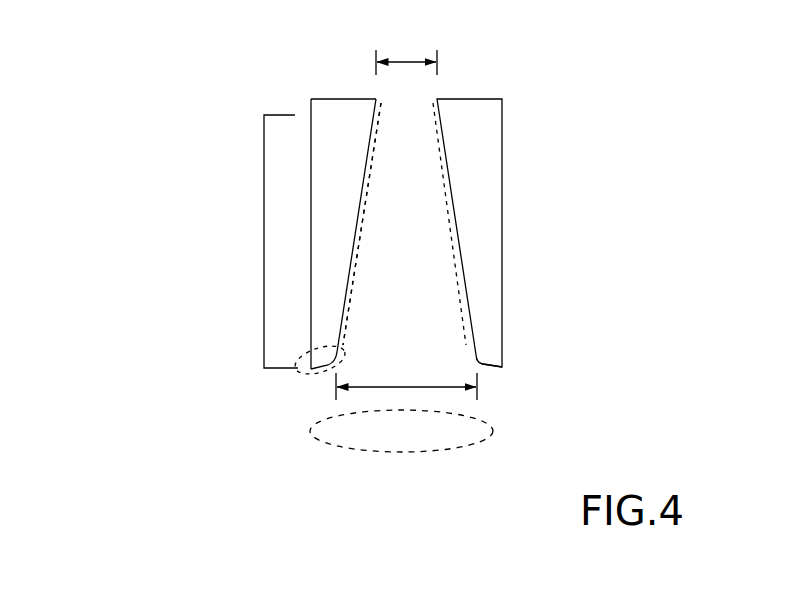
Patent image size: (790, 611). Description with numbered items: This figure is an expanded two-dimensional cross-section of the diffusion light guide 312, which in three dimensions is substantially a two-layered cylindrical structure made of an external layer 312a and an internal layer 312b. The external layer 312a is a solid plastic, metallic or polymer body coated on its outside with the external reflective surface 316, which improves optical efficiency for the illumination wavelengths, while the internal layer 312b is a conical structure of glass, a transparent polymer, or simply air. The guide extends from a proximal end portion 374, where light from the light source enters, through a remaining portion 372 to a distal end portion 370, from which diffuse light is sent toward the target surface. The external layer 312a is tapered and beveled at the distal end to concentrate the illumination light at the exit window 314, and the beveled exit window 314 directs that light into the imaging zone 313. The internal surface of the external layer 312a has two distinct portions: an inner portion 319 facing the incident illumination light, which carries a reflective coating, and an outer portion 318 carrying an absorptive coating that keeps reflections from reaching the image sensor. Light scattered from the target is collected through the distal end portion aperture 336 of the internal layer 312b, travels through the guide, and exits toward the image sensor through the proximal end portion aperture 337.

The diffusion light guide 312 is at (105, 62).
The external layer 312a is at (470, 132).
The internal layer 312b is at (412, 328).
The imaging zone 313 is at (369, 449).
The exit window 314 is at (499, 373).
The external reflective surface 316 is at (310, 290).
The outer portion of the internal surface 318 is at (374, 145).
The inner portion of the internal surface 319 is at (364, 185).
The distal end portion aperture 336 is at (449, 391).
The proximal end portion aperture 337 is at (448, 62).
The distal end portion 370 is at (296, 371).
The remaining portion 372 is at (263, 237).
The proximal end portion 374 is at (309, 100).